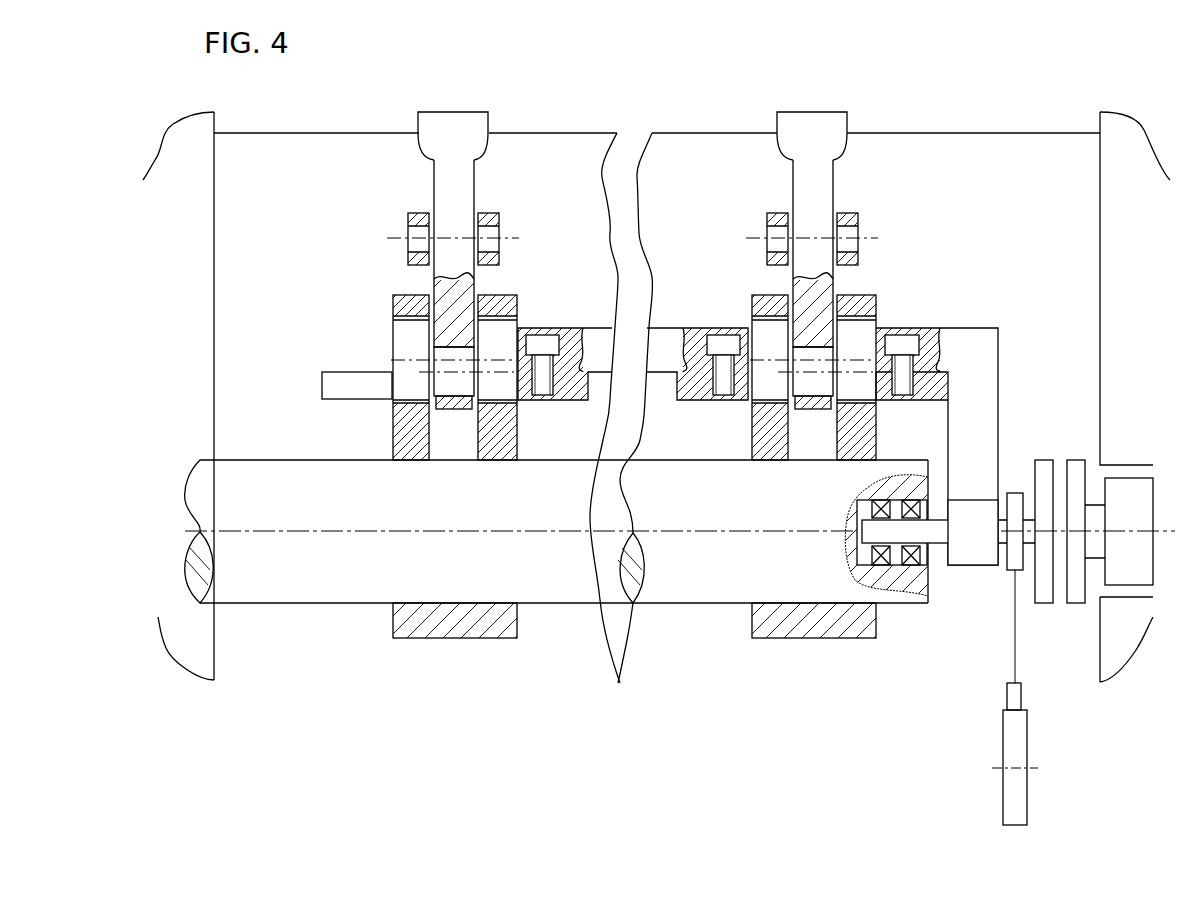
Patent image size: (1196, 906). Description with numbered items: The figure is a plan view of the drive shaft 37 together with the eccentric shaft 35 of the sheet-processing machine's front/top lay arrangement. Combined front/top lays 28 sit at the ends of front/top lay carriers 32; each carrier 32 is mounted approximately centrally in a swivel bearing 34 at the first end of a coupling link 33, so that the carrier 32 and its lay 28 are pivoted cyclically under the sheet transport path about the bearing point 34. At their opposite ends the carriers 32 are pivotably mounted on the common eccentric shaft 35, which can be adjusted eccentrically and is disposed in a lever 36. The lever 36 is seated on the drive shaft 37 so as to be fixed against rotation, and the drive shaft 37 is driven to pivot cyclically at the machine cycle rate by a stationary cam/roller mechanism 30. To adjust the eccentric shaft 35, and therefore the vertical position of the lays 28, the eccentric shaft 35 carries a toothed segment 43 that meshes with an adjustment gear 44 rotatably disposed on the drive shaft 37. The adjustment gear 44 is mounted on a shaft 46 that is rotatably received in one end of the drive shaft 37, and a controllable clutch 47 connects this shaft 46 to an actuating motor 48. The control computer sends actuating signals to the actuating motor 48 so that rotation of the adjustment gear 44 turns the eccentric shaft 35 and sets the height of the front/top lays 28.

The combined front/top lay 28 is at (812, 121).
The cam/roller mechanism 30 is at (980, 748).
The front/top lay carrier 32 is at (815, 192).
The coupling link 33 is at (858, 215).
The swivel bearing 34 is at (843, 237).
The eccentric shaft 35 is at (856, 335).
The lever 36 is at (807, 615).
The drive shaft 37 is at (376, 580).
The toothed segment 43 is at (970, 410).
The adjustment gear 44 is at (968, 547).
The shaft 46 is at (1013, 556).
The controllable clutch 47 is at (1075, 580).
The actuating motor 48 is at (1124, 567).